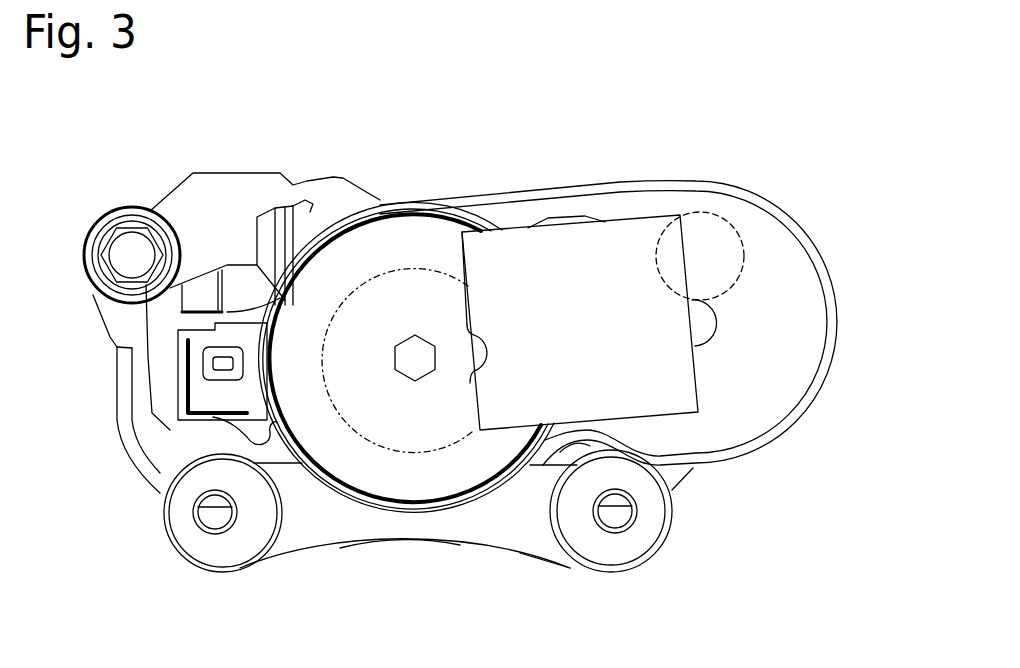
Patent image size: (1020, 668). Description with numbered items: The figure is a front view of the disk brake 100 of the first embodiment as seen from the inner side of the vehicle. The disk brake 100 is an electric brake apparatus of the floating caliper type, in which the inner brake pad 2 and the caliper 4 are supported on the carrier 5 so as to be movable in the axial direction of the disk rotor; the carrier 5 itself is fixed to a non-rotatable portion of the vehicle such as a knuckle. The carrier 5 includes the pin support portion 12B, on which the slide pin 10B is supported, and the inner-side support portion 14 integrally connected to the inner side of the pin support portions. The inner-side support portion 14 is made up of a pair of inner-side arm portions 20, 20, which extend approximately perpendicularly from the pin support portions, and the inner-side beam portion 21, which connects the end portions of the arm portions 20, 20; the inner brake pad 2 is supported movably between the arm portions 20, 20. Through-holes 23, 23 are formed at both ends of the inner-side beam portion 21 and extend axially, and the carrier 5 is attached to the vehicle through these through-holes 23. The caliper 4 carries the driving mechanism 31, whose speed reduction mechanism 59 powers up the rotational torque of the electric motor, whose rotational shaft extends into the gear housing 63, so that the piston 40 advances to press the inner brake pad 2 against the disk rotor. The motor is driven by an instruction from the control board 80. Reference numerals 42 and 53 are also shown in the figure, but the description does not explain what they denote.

The disk brake 100 is at (640, 271).
The caliper 4 is at (640, 323).
The gear housing 63 is at (808, 182).
The motor shaft hole 42 is at (732, 220).
The control board 80 is at (628, 216).
The speed reduction mechanism 59 is at (510, 216).
The driving mechanism 31 is at (463, 232).
The piston 40 is at (398, 265).
The pin support portion 12B is at (101, 208).
The slide pin 10B is at (94, 217).
The bolt head 53 is at (124, 246).
The inner-side arm portion 20 is at (157, 374).
The inner brake pad 2 is at (175, 408).
The through-hole 23 is at (200, 527).
The carrier 5 is at (308, 555).
The inner-side support portion 14 is at (397, 546).
The inner-side beam portion 21 is at (500, 528).